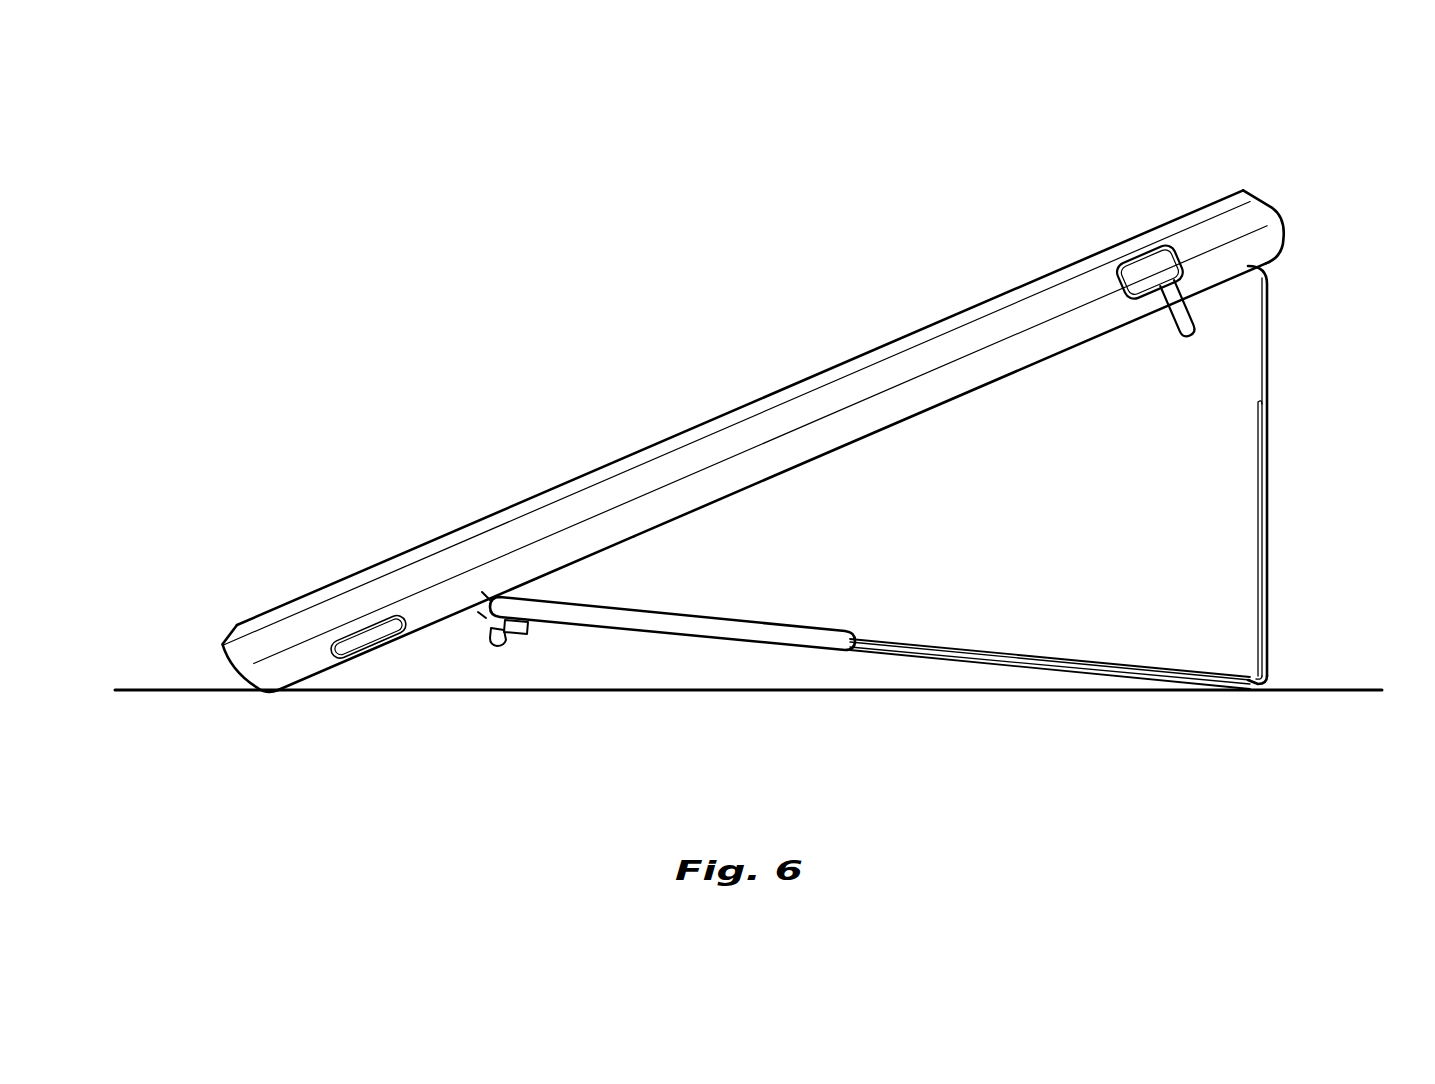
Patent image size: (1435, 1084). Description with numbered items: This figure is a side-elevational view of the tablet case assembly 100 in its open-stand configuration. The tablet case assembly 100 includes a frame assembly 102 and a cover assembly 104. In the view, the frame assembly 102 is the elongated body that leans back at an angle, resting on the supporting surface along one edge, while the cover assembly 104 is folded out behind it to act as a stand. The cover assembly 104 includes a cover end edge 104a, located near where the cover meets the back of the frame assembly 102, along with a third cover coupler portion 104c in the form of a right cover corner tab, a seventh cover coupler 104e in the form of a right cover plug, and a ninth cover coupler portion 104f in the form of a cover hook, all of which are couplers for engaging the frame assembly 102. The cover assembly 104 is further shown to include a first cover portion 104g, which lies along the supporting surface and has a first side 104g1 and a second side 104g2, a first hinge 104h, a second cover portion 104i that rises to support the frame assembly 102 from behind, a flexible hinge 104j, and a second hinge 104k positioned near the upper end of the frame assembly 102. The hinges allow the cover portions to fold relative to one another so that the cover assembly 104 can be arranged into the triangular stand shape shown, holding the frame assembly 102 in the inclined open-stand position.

The tablet case assembly 100 is at (694, 150).
The frame assembly 102 is at (612, 403).
The cover assembly 104 is at (1335, 515).
The cover end edge 104a is at (490, 600).
The third cover coupler portion 104c is at (543, 606).
The seventh cover coupler 104e is at (527, 632).
The ninth cover coupler portion 104f is at (503, 642).
The first cover portion 104g is at (973, 667).
The first side 104g1 is at (1110, 636).
The second side 104g2 is at (878, 650).
The first hinge 104h is at (1270, 683).
The second cover portion 104i is at (1258, 487).
The flexible hinge 104j is at (1270, 345).
The second hinge 104k is at (1270, 270).